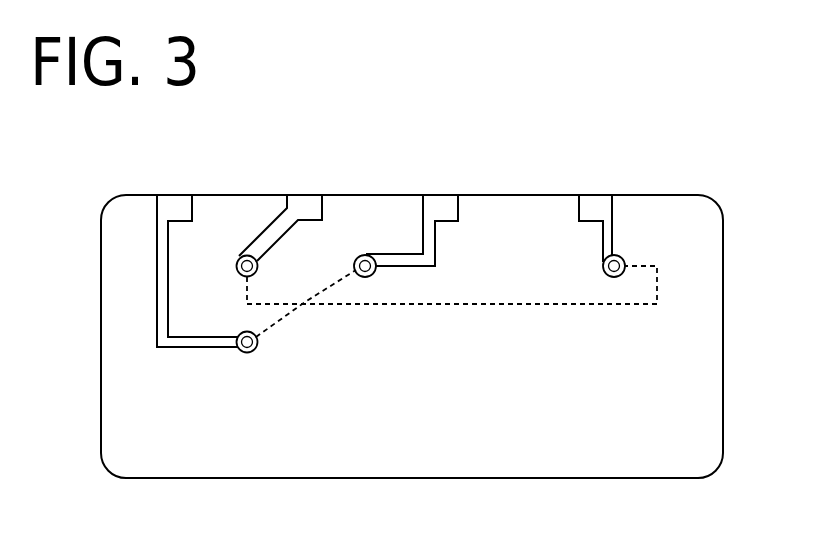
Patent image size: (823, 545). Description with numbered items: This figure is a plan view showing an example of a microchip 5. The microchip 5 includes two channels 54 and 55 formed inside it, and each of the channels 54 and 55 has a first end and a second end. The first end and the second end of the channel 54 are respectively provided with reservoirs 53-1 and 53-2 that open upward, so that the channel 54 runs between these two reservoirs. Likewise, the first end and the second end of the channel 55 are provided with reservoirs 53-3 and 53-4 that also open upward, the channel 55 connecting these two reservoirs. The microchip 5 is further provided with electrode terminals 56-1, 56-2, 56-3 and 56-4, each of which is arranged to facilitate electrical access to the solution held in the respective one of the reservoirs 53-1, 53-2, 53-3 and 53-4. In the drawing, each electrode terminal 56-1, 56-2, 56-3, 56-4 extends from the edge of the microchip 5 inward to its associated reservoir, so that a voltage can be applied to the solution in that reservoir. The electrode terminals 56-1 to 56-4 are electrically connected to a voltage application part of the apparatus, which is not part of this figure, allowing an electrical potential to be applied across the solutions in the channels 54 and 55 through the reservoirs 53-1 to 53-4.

The microchip 5 is at (723, 270).
The reservoir 53-1 is at (360, 257).
The reservoir 53-2 is at (250, 353).
The reservoir 53-3 is at (237, 264).
The reservoir 53-4 is at (617, 263).
The channel 54 is at (283, 316).
The channel 55 is at (507, 305).
The electrode terminal 56-1 is at (397, 253).
The electrode terminal 56-2 is at (222, 348).
The electrode terminal 56-3 is at (272, 223).
The electrode terminal 56-4 is at (613, 258).